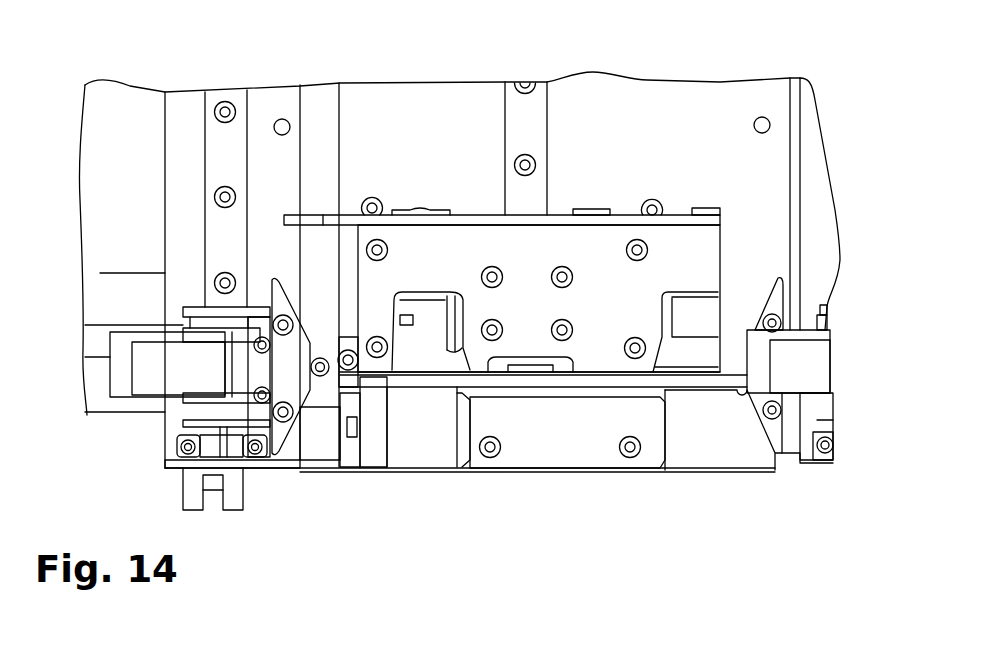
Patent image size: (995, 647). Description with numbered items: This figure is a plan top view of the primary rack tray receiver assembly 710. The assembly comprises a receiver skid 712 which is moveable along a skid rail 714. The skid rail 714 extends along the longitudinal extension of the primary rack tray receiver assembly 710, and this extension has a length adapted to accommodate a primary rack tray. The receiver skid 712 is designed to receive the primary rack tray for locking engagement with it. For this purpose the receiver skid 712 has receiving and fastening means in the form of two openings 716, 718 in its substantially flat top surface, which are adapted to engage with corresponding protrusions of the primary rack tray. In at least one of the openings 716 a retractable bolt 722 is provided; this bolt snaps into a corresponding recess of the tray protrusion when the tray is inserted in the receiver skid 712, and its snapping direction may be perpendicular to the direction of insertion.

The primary rack tray receiver assembly 710 is at (745, 55).
The receiver skid 712 is at (592, 240).
The skid rail 714 is at (517, 123).
The opening 716 is at (427, 320).
The opening 718 is at (698, 318).
The retractable bolt 722 is at (402, 322).